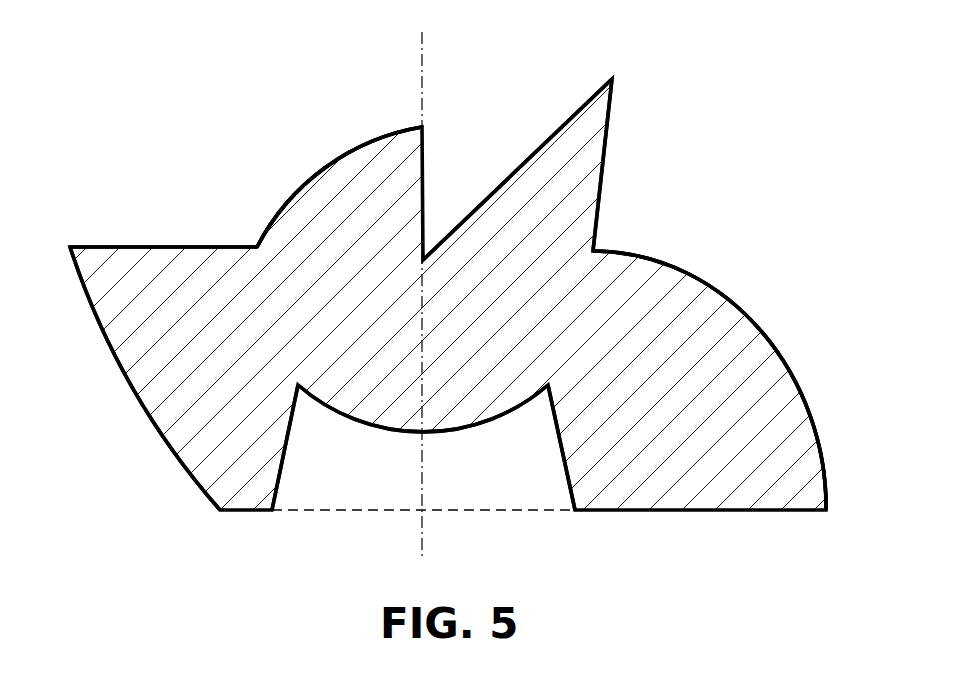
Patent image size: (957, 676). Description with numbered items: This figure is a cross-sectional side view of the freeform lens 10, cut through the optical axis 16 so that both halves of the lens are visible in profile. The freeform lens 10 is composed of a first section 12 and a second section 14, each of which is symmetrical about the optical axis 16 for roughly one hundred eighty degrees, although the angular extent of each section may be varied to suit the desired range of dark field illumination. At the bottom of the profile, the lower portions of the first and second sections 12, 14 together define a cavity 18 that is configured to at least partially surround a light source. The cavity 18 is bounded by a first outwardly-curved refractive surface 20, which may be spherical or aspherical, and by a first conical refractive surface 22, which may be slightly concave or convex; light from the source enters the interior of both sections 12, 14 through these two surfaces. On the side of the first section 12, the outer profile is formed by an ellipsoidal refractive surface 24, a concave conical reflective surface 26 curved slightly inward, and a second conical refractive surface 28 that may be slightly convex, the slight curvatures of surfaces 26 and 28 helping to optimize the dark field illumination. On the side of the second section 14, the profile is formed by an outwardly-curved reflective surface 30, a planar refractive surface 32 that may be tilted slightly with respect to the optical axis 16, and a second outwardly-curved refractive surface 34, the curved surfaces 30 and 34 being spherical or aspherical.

The freeform lens 10 is at (775, 143).
The first section 12 is at (723, 292).
The second section 14 is at (284, 209).
The optical axis 16 is at (423, 60).
The cavity 18 is at (365, 474).
The first outwardly-curved refractive surface 20 is at (482, 428).
The first conical refractive surface 22 is at (283, 465).
The ellipsoidal refractive surface 24 is at (770, 333).
The concave conical reflective surface 26 is at (497, 175).
The second conical refractive surface 28 is at (600, 180).
The outwardly-curved reflective surface 30 is at (128, 381).
The planar refractive surface 32 is at (172, 247).
The second outwardly-curved refractive surface 34 is at (340, 159).